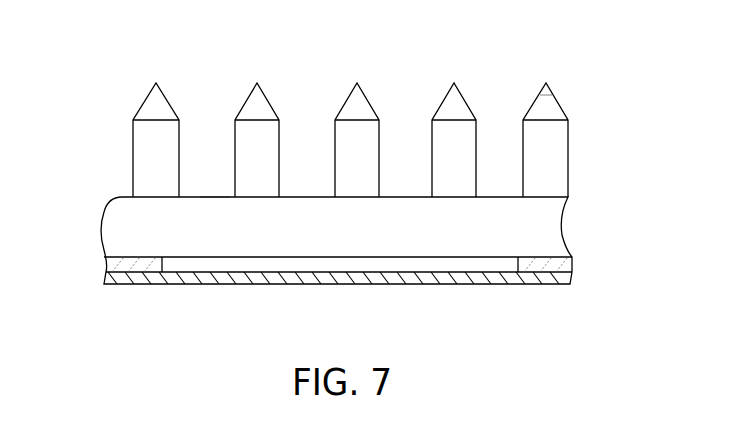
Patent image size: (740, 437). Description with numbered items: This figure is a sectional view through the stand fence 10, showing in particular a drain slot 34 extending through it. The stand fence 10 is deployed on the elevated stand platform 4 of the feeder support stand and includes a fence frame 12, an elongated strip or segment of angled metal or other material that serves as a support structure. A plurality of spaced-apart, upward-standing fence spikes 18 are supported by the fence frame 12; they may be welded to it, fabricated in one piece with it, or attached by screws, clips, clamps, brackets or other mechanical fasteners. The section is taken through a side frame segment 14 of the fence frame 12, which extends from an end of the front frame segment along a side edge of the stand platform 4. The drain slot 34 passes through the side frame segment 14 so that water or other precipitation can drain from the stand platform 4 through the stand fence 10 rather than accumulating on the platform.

The stand fence 10 is at (565, 97).
The fence frame 12 is at (116, 188).
The side frame segment 14 is at (304, 208).
The fence spikes 18 is at (167, 100).
The drain slot 34 is at (232, 262).
The stand platform 4 is at (510, 291).